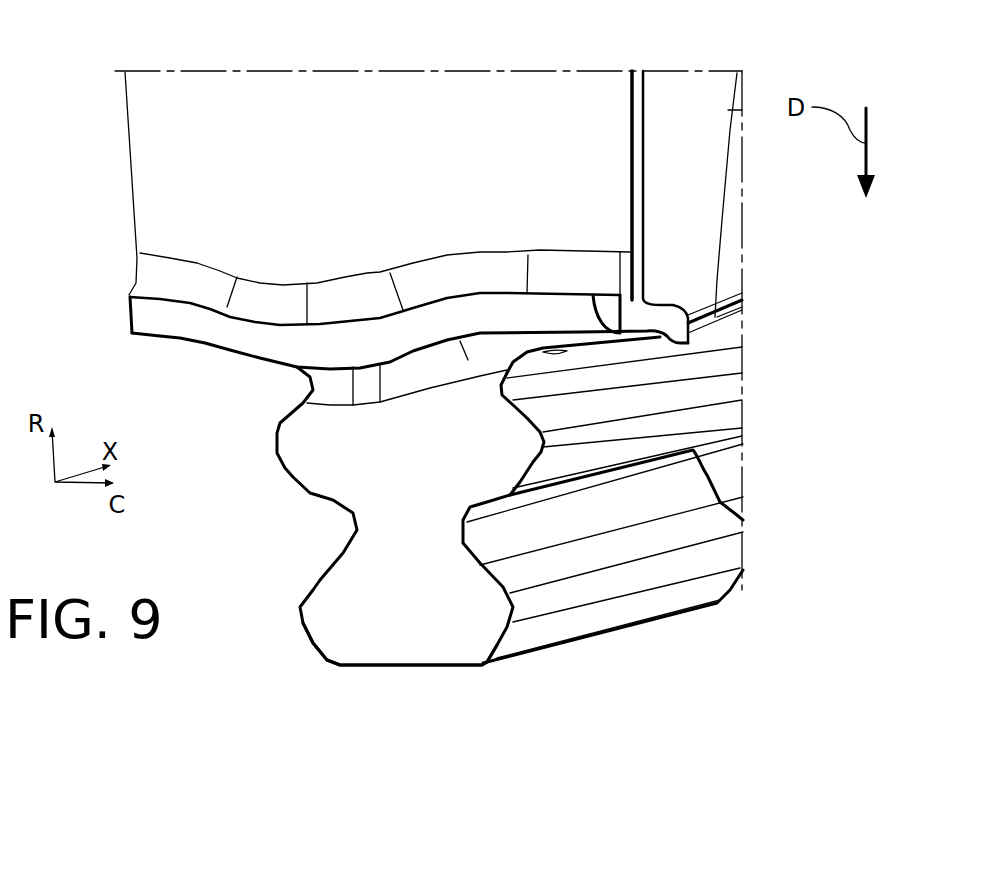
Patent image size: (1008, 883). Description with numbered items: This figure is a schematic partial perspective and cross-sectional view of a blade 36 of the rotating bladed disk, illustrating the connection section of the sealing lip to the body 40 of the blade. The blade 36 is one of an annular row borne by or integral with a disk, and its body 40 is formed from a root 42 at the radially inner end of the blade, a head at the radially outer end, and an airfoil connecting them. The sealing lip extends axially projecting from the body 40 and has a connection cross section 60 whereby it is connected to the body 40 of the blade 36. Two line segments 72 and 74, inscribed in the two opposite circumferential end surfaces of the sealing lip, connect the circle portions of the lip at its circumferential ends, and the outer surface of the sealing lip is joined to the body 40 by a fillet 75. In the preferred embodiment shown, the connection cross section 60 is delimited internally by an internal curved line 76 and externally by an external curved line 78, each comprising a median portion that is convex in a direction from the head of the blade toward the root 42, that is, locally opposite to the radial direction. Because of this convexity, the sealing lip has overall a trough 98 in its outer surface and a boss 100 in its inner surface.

The blade 36 is at (267, 507).
The body 40 is at (660, 143).
The root 42 is at (397, 628).
The connection cross section 60 is at (512, 318).
The line segment 72 is at (593, 295).
The line segment 74 is at (130, 308).
The fillet 75 is at (278, 297).
The internal curved line 76 is at (173, 338).
The external curved line 78 is at (188, 300).
The trough 98 is at (377, 313).
The boss 100 is at (380, 402).